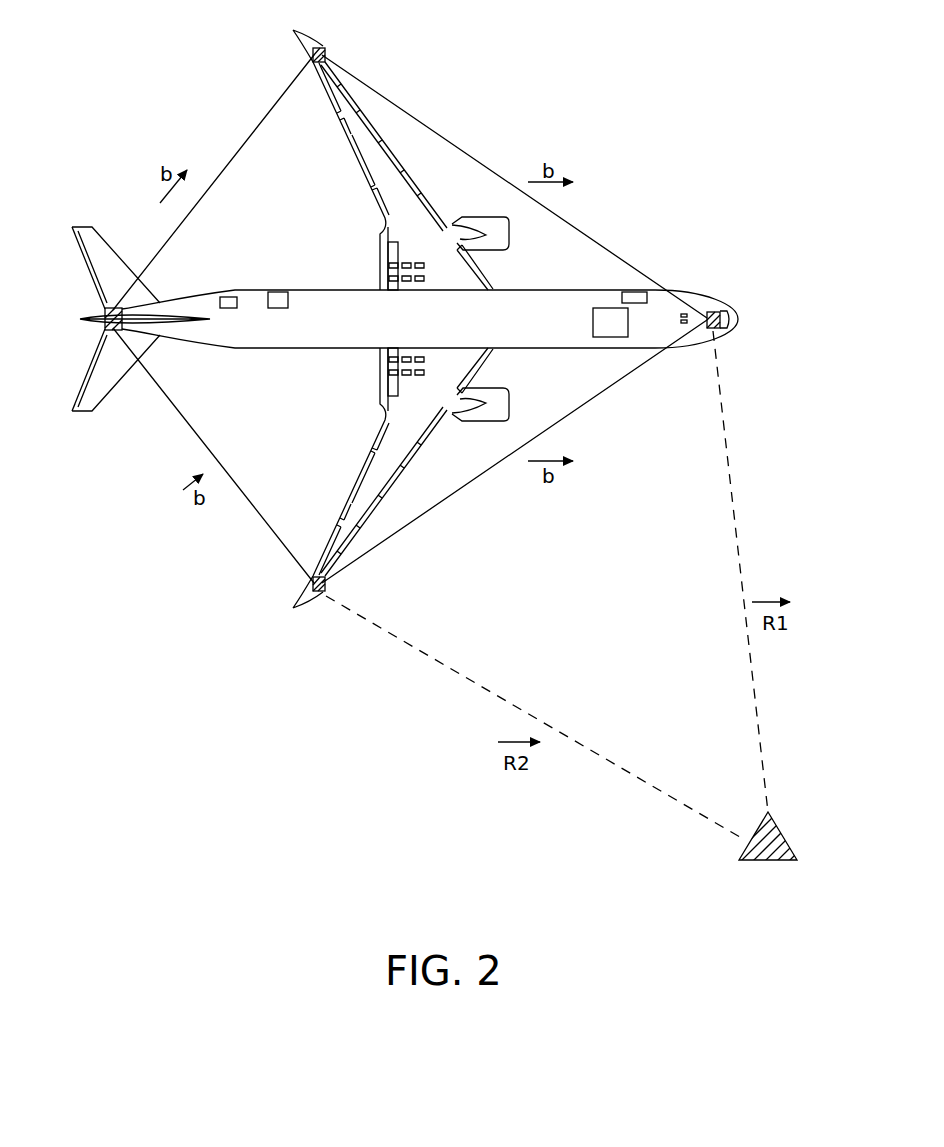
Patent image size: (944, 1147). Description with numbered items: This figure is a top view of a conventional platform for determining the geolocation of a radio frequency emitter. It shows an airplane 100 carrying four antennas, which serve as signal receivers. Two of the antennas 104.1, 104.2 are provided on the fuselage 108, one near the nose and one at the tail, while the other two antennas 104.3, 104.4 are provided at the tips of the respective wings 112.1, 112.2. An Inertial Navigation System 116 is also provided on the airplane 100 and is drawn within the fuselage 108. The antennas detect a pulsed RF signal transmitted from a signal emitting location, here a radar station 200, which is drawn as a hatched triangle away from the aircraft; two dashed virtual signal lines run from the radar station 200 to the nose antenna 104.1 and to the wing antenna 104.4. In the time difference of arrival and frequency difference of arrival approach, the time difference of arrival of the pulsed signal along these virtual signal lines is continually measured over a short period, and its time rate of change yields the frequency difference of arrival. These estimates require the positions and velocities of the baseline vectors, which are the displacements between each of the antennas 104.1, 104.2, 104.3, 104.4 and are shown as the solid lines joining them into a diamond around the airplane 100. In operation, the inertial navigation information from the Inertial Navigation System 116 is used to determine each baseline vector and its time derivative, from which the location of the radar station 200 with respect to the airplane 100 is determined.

The airplane 100 is at (695, 292).
The antenna 104.1 is at (731, 318).
The antenna 104.2 is at (105, 312).
The antenna 104.3 is at (326, 49).
The antenna 104.4 is at (326, 586).
The fuselage 108 is at (568, 331).
The wing 112.1 is at (408, 197).
The wing 112.2 is at (397, 442).
The Inertial Navigation System 116 is at (607, 314).
The radar station 200 is at (785, 835).